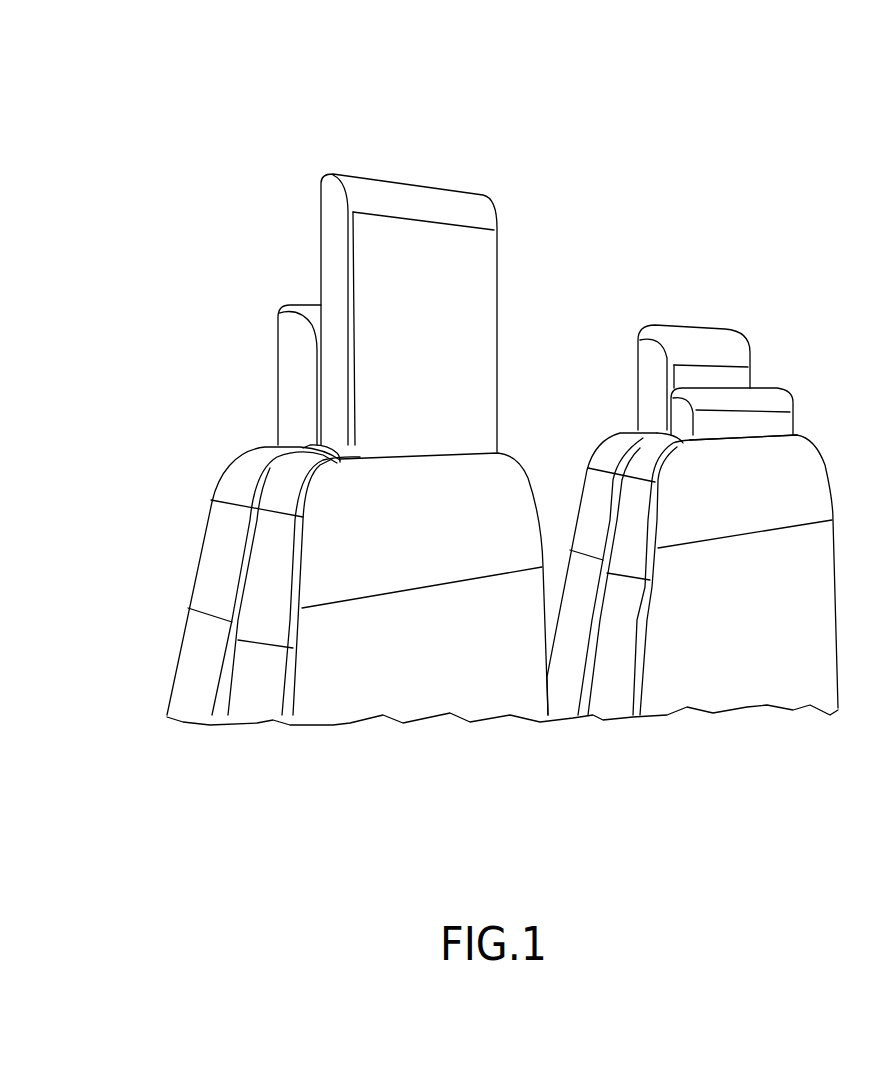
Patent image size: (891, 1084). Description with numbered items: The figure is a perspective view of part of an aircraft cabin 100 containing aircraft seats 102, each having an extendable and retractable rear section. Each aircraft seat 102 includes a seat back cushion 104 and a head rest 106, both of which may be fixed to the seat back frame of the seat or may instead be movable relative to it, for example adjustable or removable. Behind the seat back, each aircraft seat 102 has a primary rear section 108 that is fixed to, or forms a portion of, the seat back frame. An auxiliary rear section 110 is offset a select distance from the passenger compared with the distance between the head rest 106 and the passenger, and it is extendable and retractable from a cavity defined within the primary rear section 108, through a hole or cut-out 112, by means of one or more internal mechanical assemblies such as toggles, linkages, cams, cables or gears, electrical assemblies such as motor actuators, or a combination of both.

The aircraft cabin 100 is at (145, 82).
The aircraft seat 102 is at (280, 160).
The seat back cushion 104 is at (213, 563).
The head rest 106 is at (288, 383).
The primary rear section 108 is at (415, 713).
The auxiliary rear section 110 is at (415, 197).
The hole or cut-out 112 is at (780, 435).